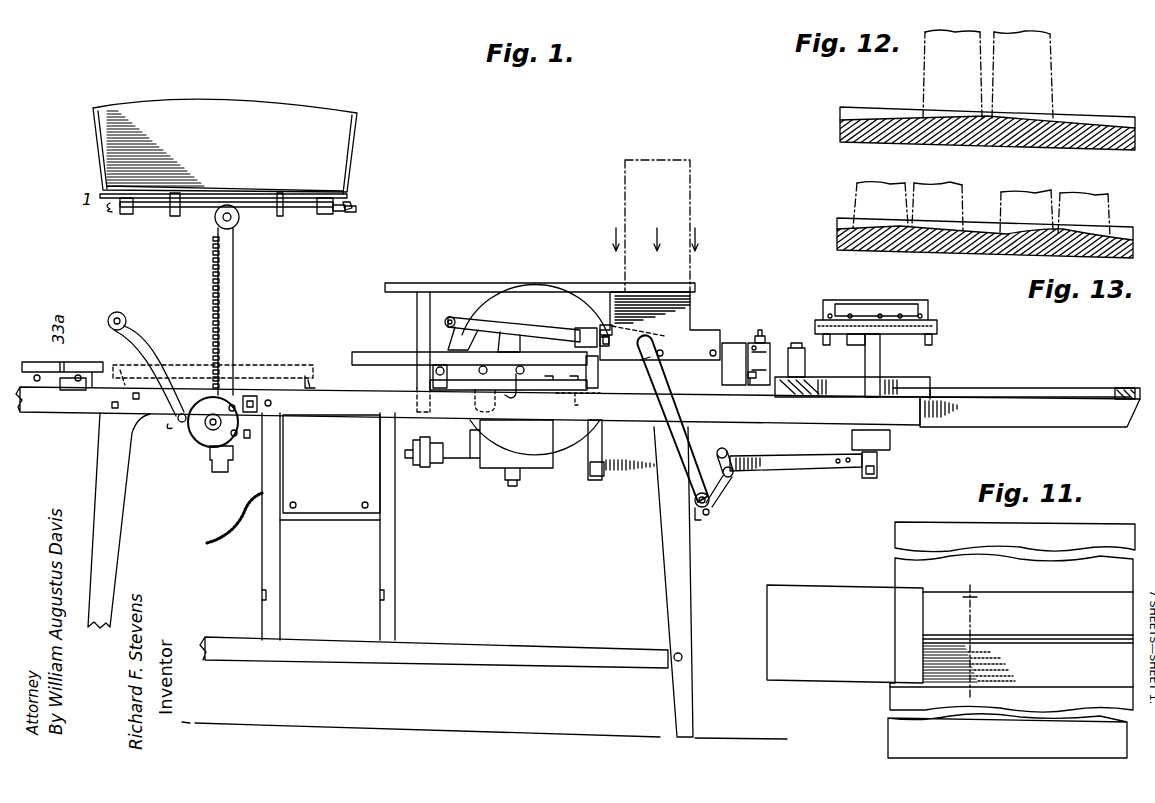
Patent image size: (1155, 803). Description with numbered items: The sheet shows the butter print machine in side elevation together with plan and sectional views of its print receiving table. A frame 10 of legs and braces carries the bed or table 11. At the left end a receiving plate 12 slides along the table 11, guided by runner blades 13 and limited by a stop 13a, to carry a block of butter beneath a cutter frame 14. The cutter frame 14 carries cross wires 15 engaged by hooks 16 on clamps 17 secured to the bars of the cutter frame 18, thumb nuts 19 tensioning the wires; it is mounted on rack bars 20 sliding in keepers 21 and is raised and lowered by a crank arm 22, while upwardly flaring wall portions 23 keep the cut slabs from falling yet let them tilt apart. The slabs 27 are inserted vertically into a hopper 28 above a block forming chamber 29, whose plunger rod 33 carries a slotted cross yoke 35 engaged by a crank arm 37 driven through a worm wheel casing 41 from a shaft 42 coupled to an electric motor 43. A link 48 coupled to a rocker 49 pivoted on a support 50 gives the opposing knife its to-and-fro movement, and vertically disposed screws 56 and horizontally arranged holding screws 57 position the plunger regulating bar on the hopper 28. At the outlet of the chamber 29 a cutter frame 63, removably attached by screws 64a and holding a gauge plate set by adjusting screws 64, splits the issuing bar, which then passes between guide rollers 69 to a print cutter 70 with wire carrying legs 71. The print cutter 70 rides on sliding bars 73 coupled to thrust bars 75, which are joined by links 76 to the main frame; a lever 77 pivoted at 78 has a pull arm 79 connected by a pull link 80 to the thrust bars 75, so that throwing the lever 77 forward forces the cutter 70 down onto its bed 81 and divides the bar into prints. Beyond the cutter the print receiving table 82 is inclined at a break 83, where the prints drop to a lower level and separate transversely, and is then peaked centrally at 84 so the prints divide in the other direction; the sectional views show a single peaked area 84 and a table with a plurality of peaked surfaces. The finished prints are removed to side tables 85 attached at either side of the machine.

In FIG. 1, the frame 10 is at (666, 586).
In FIG. 1, the table 11 is at (468, 406).
In FIG. 1, the receiving plate 12 is at (94, 364).
In FIG. 11, the receiving plate 12 is at (968, 638).
In FIG. 1, the runner blades 13 is at (80, 392).
In FIG. 1, the stop 13a is at (316, 386).
In FIG. 1, the cutter frame 14 is at (290, 196).
In FIG. 1, the cross wires 15 is at (316, 216).
In FIG. 1, the hooks 16 is at (346, 209).
In FIG. 1, the clamps 17 is at (346, 203).
In FIG. 1, the cutter frame bars 18 is at (153, 212).
In FIG. 1, the thumb nuts 19 is at (357, 209).
In FIG. 1, the rack bars 20 is at (234, 282).
In FIG. 1, the keepers 21 is at (203, 436).
In FIG. 1, the crank arm 22 is at (148, 342).
In FIG. 1, the wall portions 23 is at (225, 146).
In FIG. 1, the slabs 27 is at (623, 185).
In FIG. 1, the hopper 28 is at (551, 282).
In FIG. 1, the block forming chamber 29 is at (732, 358).
In FIG. 1, the plunger rod 33 is at (374, 351).
In FIG. 1, the slotted cross yoke 35 is at (493, 414).
In FIG. 1, the crank arm 37 is at (516, 396).
In FIG. 1, the casing 41 is at (535, 369).
In FIG. 1, the shaft 42 is at (458, 466).
In FIG. 1, the electric motor 43 is at (328, 526).
In FIG. 1, the link 48 is at (550, 333).
In FIG. 1, the rocker 49 is at (452, 318).
In FIG. 1, the support 50 is at (432, 376).
In FIG. 1, the vertically disposed screws 56 is at (605, 324).
In FIG. 1, the holding screws 57 is at (600, 365).
In FIG. 1, the cutter frame 63 is at (765, 352).
In FIG. 1, the adjusting screws 64 is at (761, 330).
In FIG. 1, the screws 64a is at (748, 377).
In FIG. 1, the guide rollers 69 is at (806, 361).
In FIG. 1, the print cutter 70 is at (930, 312).
In FIG. 1, the wire carrying legs 71 is at (948, 343).
In FIG. 1, the sliding bars 73 is at (881, 358).
In FIG. 1, the thrust bars 75 is at (815, 468).
In FIG. 1, the links 76 is at (603, 444).
In FIG. 1, the lever 77 is at (686, 450).
In FIG. 1, the pivot 78 is at (710, 506).
In FIG. 1, the pull arm 79 is at (734, 486).
In FIG. 1, the pull link 80 is at (728, 452).
In FIG. 1, the bed 81 is at (928, 388).
In FIG. 11, the bed 81 is at (845, 634).
In FIG. 1, the rail 82 is at (998, 387).
In FIG. 12, the breaking ledge 83 is at (876, 116).
In FIG. 13, the breaking ledge 83 is at (957, 234).
In FIG. 11, the breaking ledge 83 is at (1011, 633).
In FIG. 12, the peaked area 84 is at (987, 114).
In FIG. 11, the peaked area 84 is at (1045, 641).
In FIG. 1, the side tables 85 is at (1062, 387).
In FIG. 11, the side tables 85 is at (894, 536).